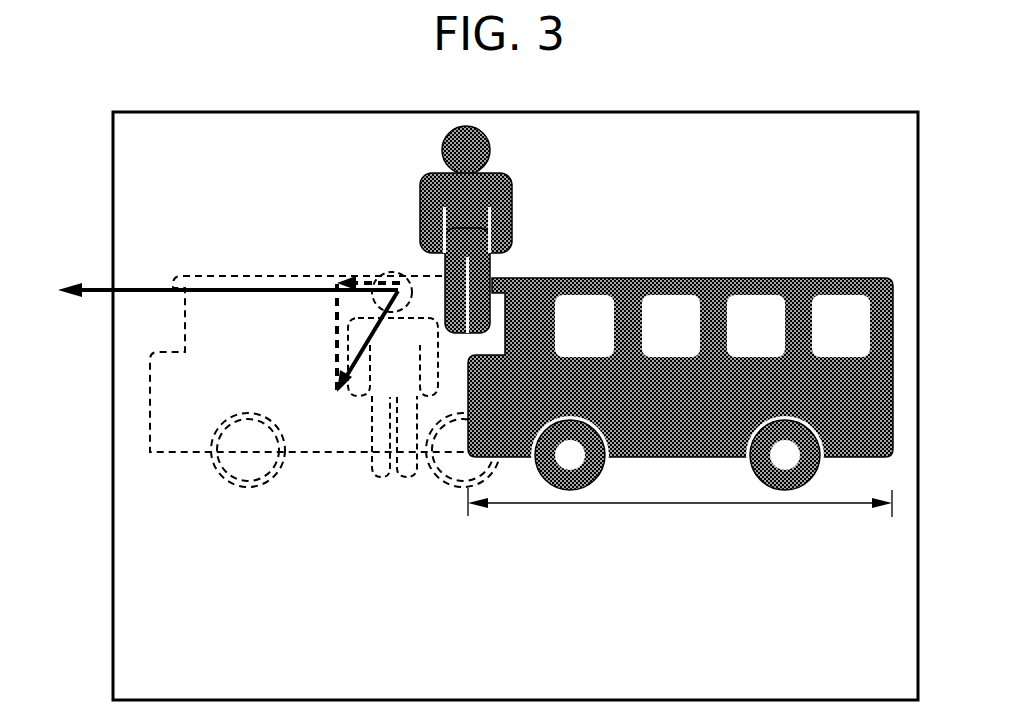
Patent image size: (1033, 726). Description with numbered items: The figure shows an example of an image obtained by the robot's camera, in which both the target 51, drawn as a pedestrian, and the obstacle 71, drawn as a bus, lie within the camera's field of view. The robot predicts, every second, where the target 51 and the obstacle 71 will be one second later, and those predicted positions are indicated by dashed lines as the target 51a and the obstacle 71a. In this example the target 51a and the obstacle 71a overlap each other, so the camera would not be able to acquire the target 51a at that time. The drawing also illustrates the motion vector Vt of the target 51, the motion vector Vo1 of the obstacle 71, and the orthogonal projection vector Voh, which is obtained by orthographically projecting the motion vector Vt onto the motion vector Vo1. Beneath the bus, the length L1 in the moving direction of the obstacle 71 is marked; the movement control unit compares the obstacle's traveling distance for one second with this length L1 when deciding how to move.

The target 51 is at (513, 196).
The obstacle 71 is at (748, 278).
The target in the predicted position 51a is at (408, 476).
The obstacle in the predicted position 71a is at (178, 453).
The motion vector of the obstacle Vo1 is at (148, 289).
The orthogonal projection vector Voh is at (376, 281).
The motion vector of the target Vt is at (353, 375).
The length in the moving direction of the obstacle L1 is at (688, 505).